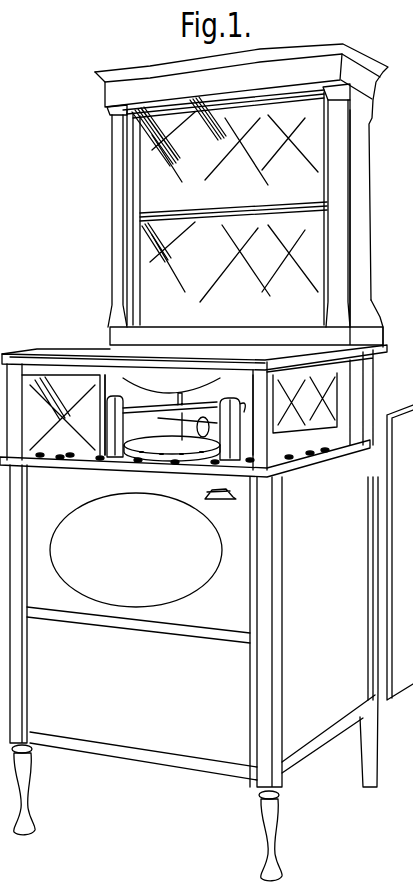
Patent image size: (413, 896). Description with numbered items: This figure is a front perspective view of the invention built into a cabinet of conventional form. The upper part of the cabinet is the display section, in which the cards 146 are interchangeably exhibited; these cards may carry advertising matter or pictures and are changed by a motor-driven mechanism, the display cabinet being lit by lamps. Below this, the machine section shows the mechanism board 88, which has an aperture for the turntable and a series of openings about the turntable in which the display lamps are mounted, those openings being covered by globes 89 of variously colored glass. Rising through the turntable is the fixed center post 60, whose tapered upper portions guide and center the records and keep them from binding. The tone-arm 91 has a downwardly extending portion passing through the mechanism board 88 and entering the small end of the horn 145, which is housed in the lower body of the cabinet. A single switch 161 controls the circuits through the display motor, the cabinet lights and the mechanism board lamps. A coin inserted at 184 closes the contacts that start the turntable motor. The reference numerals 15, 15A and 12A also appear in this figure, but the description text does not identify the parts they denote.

The door 15 is at (400, 552).
The side panel 15A is at (355, 201).
The cards 146 is at (153, 157).
The switch 161 is at (122, 415).
The center post 60 is at (179, 404).
The bracket 12A is at (200, 398).
The tone-arm 91 is at (229, 412).
The globes 89 is at (62, 462).
The mechanism board 88 is at (289, 462).
The coin insertion point 184 is at (208, 492).
The horn 145 is at (136, 550).